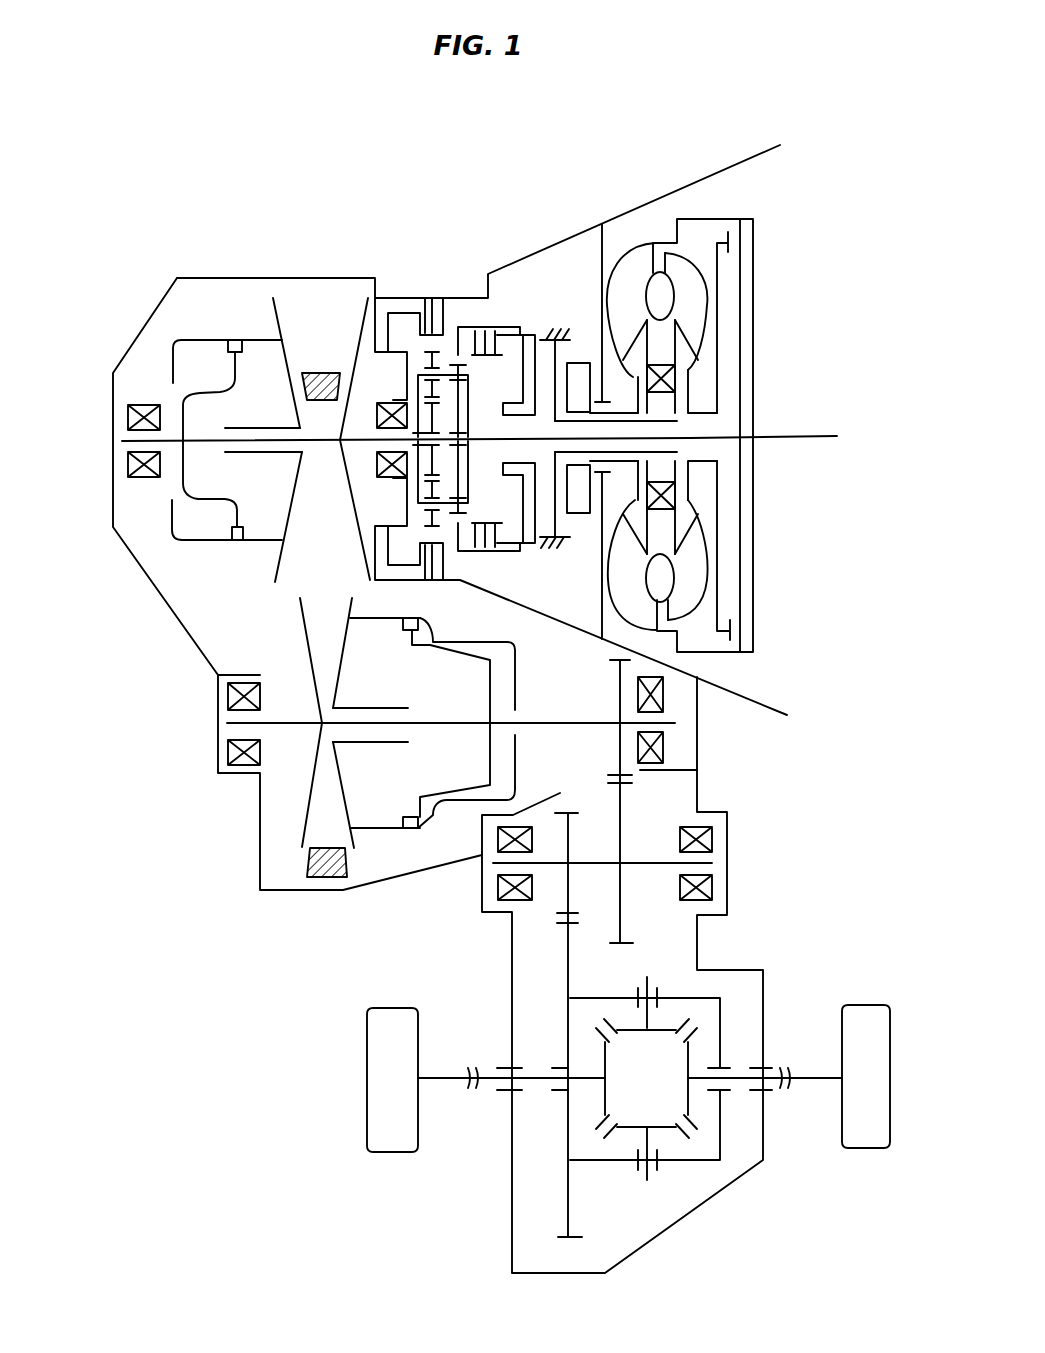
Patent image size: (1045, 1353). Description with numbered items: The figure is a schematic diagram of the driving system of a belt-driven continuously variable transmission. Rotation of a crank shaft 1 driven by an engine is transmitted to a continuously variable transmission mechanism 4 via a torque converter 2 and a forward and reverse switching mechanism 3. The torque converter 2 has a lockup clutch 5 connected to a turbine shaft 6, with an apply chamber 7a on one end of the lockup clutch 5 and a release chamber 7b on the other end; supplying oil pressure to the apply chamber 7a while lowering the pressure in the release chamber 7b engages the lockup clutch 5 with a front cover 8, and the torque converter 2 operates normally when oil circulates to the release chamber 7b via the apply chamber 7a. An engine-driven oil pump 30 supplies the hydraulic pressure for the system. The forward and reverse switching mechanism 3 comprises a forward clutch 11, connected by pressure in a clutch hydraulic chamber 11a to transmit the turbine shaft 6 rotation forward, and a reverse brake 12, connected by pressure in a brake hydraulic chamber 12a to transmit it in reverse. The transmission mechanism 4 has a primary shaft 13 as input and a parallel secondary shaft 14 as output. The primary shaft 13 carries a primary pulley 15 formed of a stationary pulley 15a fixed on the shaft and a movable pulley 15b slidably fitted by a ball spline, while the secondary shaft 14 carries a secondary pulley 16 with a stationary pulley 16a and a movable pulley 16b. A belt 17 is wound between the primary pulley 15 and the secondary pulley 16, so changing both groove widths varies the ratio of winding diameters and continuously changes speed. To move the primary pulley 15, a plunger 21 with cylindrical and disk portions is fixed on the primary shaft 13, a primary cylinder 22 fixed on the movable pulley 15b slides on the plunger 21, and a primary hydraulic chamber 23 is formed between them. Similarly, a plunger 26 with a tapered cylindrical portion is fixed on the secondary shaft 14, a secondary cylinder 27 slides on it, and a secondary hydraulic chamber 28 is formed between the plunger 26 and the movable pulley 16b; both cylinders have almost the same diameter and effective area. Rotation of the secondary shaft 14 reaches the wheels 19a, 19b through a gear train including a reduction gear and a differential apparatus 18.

The crank shaft 1 is at (806, 438).
The torque converter 2 is at (657, 240).
The forward and reverse switching mechanism 3 is at (455, 284).
The continuously variable transmission mechanism 4 is at (157, 313).
The lockup clutch 5 is at (718, 281).
The turbine shaft 6 is at (684, 437).
The apply chamber 7a is at (705, 221).
The release chamber 7b is at (723, 562).
The front cover 8 is at (743, 316).
The forward clutch 11 is at (497, 325).
The clutch hydraulic chamber 11a is at (541, 310).
The reverse brake 12 is at (432, 298).
The brake hydraulic chamber 12a is at (390, 308).
The primary shaft 13 is at (122, 441).
The secondary shaft 14 is at (228, 722).
The primary pulley 15 is at (249, 417).
The stationary pulley 15a is at (360, 330).
The movable pulley 15b is at (283, 340).
The secondary pulley 16 is at (322, 723).
The stationary pulley 16a is at (298, 615).
The movable pulley 16b is at (342, 648).
The belt 17 is at (327, 878).
The differential apparatus 18 is at (722, 998).
The wheel 19a is at (393, 1147).
The wheel 19b is at (867, 1143).
The plunger 21 is at (180, 394).
The primary cylinder 22 is at (218, 338).
The primary hydraulic chamber 23 is at (283, 497).
The plunger 26 is at (447, 805).
The secondary cylinder 27 is at (390, 830).
The secondary hydraulic chamber 28 is at (363, 783).
The oil pump 30 is at (580, 514).